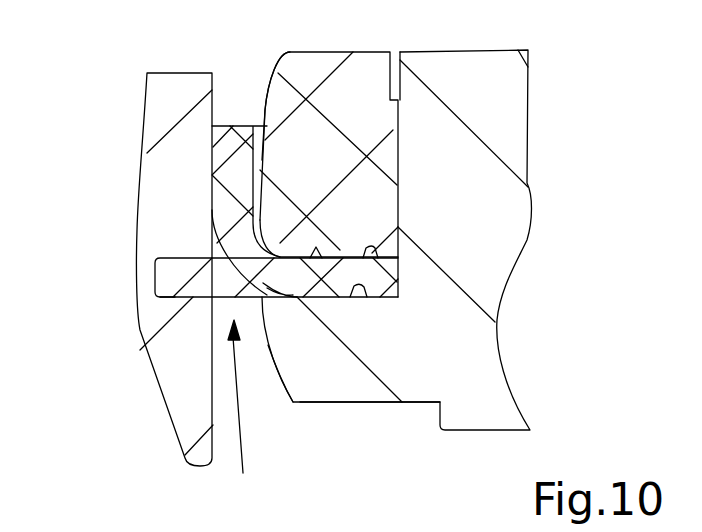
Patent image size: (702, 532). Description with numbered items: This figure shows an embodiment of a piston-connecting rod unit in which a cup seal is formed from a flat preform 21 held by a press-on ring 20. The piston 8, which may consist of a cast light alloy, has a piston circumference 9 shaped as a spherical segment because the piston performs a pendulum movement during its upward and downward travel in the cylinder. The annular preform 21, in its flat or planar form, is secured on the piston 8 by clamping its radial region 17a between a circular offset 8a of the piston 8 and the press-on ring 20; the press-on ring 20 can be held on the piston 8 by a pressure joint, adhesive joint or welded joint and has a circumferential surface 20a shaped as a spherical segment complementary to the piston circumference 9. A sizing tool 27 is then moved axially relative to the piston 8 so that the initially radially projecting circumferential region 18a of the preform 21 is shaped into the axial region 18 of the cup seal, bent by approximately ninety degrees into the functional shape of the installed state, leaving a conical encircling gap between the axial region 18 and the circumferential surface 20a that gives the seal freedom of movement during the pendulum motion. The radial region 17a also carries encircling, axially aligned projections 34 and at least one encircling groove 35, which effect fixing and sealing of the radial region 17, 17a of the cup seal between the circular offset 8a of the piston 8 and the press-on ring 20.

The piston 8 is at (457, 348).
The circular offset 8a is at (327, 385).
The piston circumference 9 is at (287, 383).
The radial region 17 is at (412, 277).
The radial region 17a is at (343, 277).
The axial region 18 is at (222, 210).
The circumferential region 18a is at (163, 297).
The press-on ring 20 is at (373, 122).
The circumferential surface 20a is at (270, 80).
The preform 21 is at (244, 413).
The sizing tool 27 is at (162, 98).
The projections 34 is at (375, 247).
The encircling groove 35 is at (360, 297).